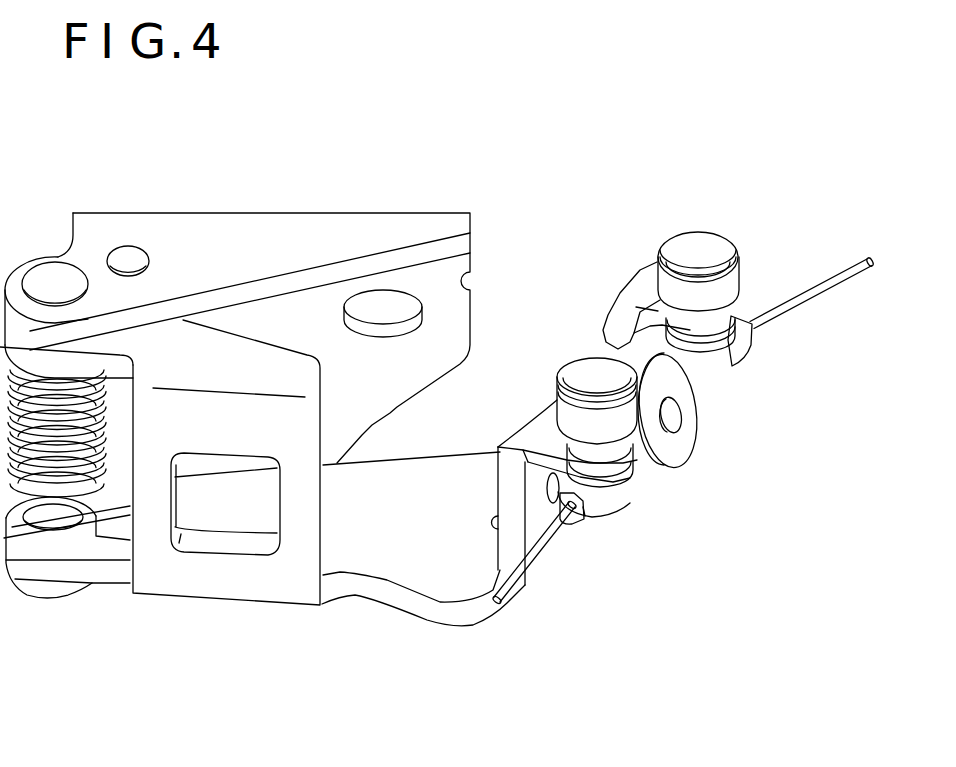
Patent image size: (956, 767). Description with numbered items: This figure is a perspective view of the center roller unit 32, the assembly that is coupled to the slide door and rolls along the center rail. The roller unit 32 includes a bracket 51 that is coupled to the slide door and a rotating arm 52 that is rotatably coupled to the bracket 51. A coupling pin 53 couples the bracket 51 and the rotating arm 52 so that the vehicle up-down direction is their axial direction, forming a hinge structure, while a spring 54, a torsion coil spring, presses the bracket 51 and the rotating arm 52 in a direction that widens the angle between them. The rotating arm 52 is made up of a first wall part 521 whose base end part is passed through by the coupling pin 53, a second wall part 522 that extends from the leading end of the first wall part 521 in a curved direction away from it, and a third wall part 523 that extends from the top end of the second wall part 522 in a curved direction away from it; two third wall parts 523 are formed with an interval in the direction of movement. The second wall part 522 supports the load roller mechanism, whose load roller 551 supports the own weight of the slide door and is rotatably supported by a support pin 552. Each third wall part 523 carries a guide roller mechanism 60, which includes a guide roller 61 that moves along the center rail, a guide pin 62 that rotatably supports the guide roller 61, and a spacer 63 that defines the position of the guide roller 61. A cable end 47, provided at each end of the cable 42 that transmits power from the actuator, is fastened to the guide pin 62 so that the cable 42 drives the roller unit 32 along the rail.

The center roller unit 32 is at (185, 161).
The cable 42 is at (841, 273).
The cable end 47 is at (601, 520).
The bracket 51 is at (322, 213).
The rotating arm 52 is at (170, 578).
The coupling pin 53 is at (48, 275).
The spring 54 is at (103, 540).
The guide roller mechanism 60 is at (635, 307).
The guide roller 61 is at (640, 433).
The guide pin 62 is at (590, 370).
The spacer 63 is at (607, 503).
The first wall part 521 is at (392, 577).
The second wall part 522 is at (500, 541).
The third wall part 523 is at (540, 420).
The load roller 551 is at (718, 424).
The support pin 552 is at (684, 415).